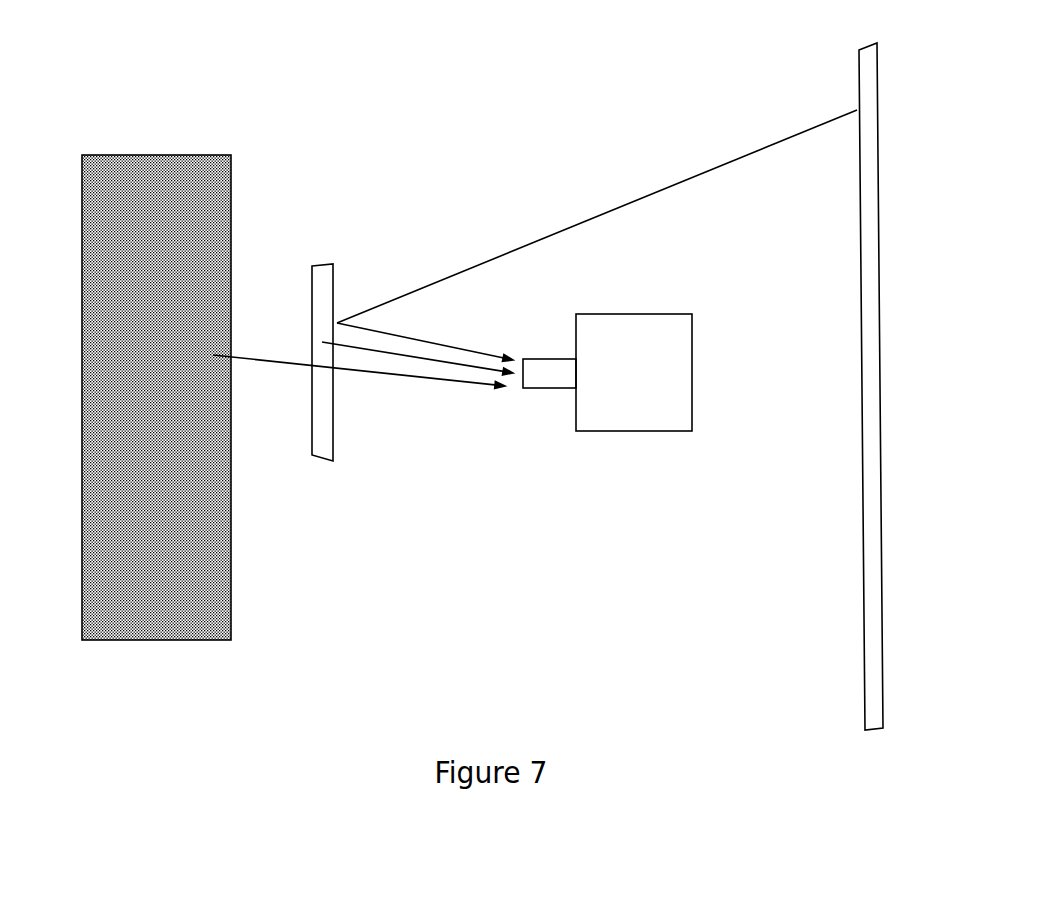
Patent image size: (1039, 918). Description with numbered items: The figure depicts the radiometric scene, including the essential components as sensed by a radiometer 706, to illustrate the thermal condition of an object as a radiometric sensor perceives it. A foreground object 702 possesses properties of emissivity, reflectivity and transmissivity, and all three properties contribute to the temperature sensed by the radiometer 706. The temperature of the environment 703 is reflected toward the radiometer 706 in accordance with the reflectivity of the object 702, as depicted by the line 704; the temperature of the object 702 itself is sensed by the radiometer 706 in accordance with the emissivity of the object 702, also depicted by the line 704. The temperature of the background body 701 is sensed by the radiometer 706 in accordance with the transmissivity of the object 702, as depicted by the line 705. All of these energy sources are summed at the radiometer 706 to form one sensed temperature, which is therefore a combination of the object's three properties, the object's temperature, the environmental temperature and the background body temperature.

The background body 701 is at (230, 160).
The foreground object 702 is at (327, 258).
The environment 703 is at (865, 192).
The line 704 is at (447, 362).
The line 705 is at (385, 375).
The radiometer 706 is at (680, 313).